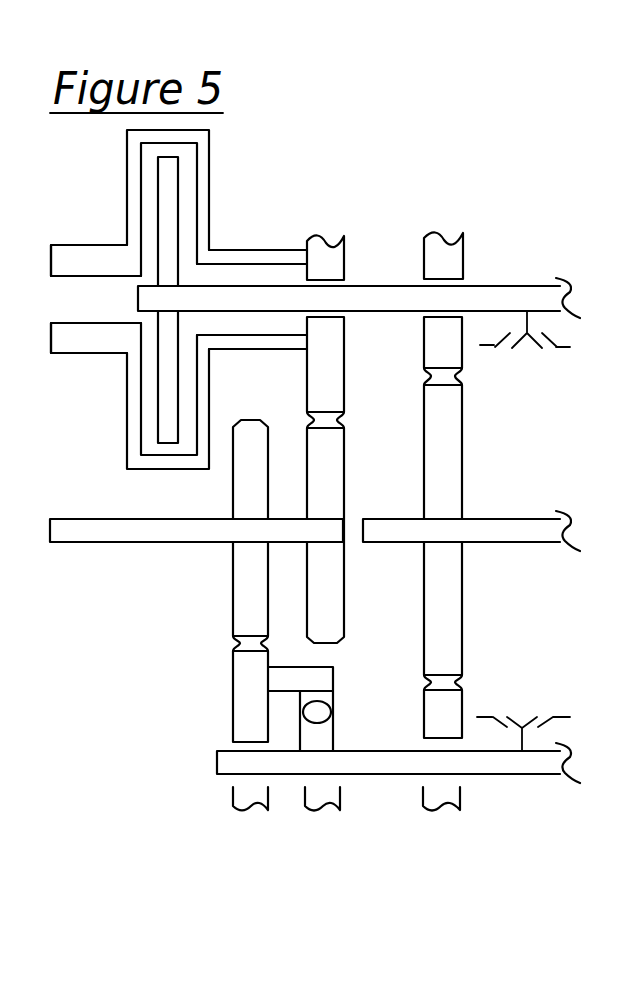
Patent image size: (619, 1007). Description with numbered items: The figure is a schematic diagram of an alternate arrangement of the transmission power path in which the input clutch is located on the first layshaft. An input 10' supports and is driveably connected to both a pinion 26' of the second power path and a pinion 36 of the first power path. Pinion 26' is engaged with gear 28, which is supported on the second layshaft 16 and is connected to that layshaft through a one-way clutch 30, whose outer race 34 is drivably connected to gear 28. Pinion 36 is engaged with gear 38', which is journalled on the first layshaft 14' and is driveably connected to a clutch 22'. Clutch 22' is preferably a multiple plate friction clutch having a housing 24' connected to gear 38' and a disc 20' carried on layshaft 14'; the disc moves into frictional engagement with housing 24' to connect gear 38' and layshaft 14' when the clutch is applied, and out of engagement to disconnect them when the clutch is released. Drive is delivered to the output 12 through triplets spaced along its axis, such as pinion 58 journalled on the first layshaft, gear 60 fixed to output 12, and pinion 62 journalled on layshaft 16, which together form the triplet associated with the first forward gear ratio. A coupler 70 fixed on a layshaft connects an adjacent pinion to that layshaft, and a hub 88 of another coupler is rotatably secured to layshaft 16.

The input 10' is at (196, 557).
The output 12 is at (498, 533).
The first layshaft 14' is at (359, 270).
The second layshaft 16 is at (500, 763).
The disc 20' is at (104, 299).
The clutch 22' is at (193, 282).
The housing 24' is at (110, 300).
The pinion 26' is at (205, 535).
The gear 28 is at (243, 680).
The one-way clutch 30 is at (325, 733).
The outer race 34 is at (317, 678).
The pinion 36 is at (325, 472).
The gear 38' is at (363, 331).
The pinion 58 is at (450, 257).
The gear 60 is at (445, 505).
The pinion 62 is at (443, 708).
The coupler 70 is at (513, 376).
The hub 88 is at (522, 688).